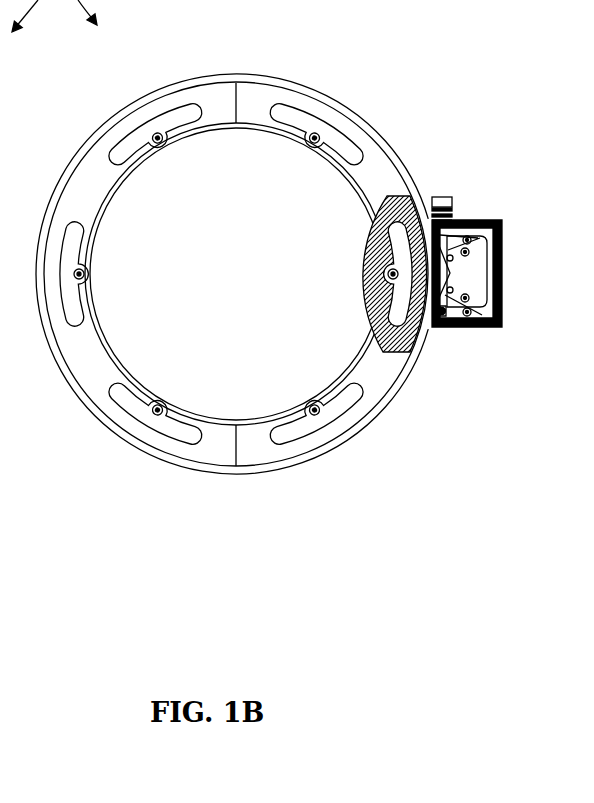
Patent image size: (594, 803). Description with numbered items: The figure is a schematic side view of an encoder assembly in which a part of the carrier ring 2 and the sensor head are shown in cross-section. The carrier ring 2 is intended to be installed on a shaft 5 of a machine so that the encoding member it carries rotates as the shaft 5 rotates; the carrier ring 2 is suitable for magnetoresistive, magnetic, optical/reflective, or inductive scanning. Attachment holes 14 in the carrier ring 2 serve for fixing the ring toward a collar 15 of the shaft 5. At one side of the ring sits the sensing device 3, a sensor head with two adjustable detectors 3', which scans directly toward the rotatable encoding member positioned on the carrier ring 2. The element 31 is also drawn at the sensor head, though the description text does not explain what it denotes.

The collar 15 is at (233, 74).
The carrier ring 2 is at (343, 126).
The attachment holes 14 is at (163, 144).
The shaft 5 is at (250, 290).
The sensing device 3 is at (399, 273).
The adjustable detectors 3' is at (461, 197).
The clamp fastener 31 is at (450, 306).